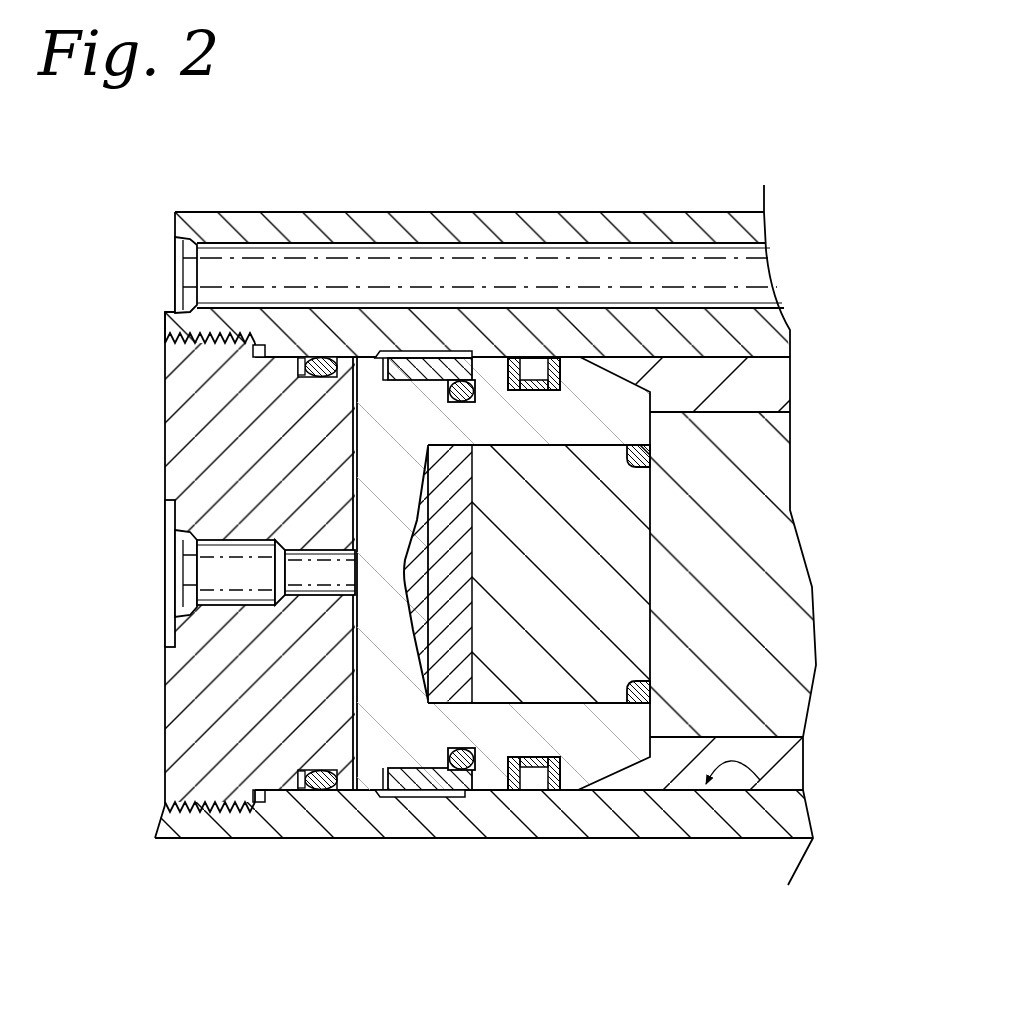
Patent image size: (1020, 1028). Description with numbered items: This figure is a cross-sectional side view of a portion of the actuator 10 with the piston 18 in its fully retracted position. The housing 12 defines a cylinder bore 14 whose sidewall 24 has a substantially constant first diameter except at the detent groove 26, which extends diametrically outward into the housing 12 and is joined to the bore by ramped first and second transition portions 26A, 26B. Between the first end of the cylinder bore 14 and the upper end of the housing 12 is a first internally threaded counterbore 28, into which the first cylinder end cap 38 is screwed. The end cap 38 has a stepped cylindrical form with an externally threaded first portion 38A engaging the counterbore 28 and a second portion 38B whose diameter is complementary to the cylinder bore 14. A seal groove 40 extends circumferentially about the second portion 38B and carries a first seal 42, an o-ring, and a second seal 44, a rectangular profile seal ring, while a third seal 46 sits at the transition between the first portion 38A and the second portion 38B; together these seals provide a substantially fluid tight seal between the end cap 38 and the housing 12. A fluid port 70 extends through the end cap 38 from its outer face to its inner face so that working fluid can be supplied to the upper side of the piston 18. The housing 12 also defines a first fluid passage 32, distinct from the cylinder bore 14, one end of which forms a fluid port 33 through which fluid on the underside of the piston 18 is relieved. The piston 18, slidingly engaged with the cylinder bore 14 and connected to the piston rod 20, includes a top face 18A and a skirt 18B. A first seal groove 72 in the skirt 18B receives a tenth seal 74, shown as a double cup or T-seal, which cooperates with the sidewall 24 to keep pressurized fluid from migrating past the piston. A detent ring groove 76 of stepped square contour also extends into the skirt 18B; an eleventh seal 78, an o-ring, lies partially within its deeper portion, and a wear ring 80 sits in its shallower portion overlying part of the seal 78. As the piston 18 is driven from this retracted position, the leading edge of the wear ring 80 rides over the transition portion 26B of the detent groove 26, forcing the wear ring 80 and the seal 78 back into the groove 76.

The actuator 10 is at (737, 900).
The housing 12 is at (385, 822).
The cylinder bore 14 is at (785, 773).
The piston 18 is at (597, 762).
The top face 18A is at (348, 450).
The skirt 18B is at (600, 742).
The piston rod 20 is at (775, 700).
The sidewall 24 is at (813, 838).
The detent groove 26 is at (427, 797).
The seal flange 26A is at (378, 793).
The second transition portion 26B is at (476, 750).
The first internally threaded counterbore 28 is at (222, 810).
The first fluid passage 32 is at (450, 250).
The fluid port 33 is at (170, 278).
The first cylinder end cap 38 is at (182, 484).
The externally threaded first portion 38A is at (209, 363).
The second portion 38B is at (284, 368).
The seal groove 40 is at (352, 397).
The first seal 42 is at (317, 770).
The second seal 44 is at (262, 790).
The third seal 46 is at (253, 797).
The fluid port 70 is at (107, 606).
The first seal groove 72 is at (567, 354).
The tenth seal 74 is at (535, 357).
The detent ring groove 76 is at (486, 357).
The eleventh seal 78 is at (448, 377).
The wear ring 80 is at (420, 352).